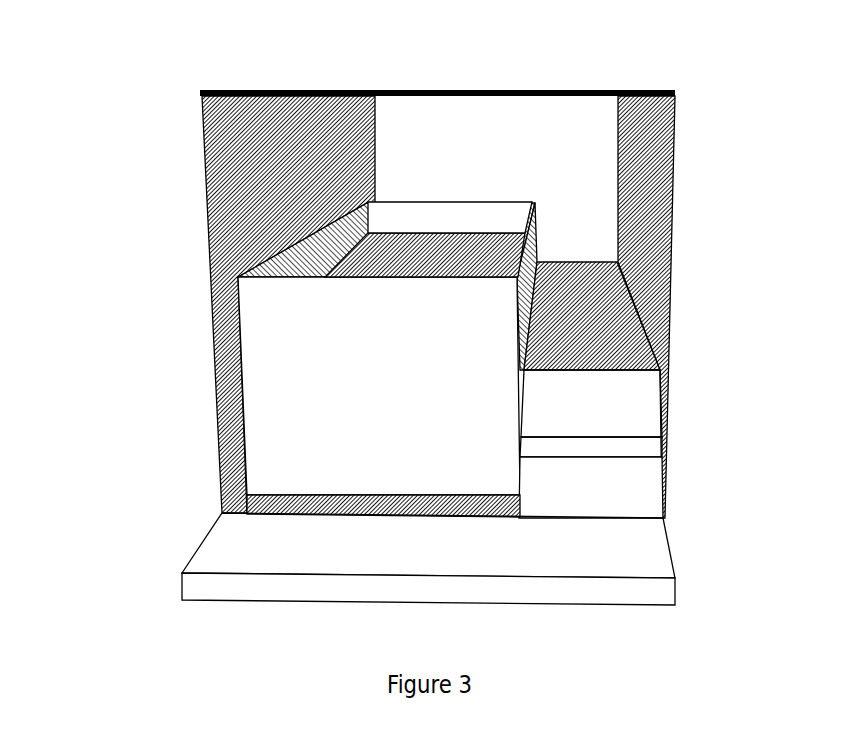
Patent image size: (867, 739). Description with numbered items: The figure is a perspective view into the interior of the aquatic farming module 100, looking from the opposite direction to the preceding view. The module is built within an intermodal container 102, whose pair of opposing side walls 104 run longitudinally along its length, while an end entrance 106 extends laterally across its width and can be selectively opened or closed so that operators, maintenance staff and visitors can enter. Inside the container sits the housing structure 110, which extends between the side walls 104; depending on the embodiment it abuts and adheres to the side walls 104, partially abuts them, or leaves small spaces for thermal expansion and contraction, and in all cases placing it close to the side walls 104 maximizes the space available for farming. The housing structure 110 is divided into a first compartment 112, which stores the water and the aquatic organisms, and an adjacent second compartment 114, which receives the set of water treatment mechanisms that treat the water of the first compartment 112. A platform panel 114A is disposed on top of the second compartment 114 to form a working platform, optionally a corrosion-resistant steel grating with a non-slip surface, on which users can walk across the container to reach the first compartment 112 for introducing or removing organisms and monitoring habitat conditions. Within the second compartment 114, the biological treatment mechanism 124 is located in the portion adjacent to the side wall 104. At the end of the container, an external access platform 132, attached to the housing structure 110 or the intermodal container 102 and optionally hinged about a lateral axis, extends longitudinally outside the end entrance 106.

The aquatic farming module 100 is at (147, 62).
The intermodal container 102 is at (330, 86).
The side wall 104 is at (257, 197).
The end entrance 106 is at (590, 125).
The housing structure 110 is at (547, 222).
The first compartment 112 is at (287, 382).
The second compartment 114 is at (640, 418).
The platform panel 114A is at (628, 333).
The biological treatment mechanism 124 is at (640, 502).
The external access platform 132 is at (257, 546).